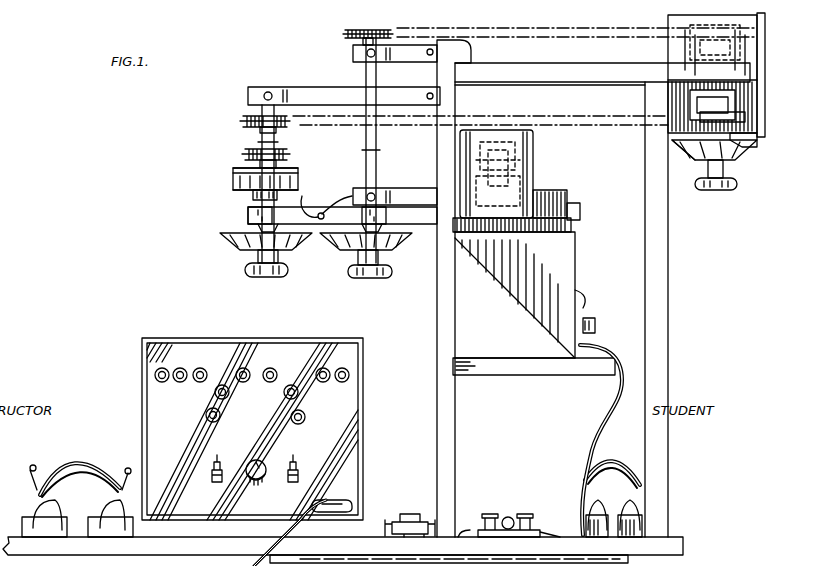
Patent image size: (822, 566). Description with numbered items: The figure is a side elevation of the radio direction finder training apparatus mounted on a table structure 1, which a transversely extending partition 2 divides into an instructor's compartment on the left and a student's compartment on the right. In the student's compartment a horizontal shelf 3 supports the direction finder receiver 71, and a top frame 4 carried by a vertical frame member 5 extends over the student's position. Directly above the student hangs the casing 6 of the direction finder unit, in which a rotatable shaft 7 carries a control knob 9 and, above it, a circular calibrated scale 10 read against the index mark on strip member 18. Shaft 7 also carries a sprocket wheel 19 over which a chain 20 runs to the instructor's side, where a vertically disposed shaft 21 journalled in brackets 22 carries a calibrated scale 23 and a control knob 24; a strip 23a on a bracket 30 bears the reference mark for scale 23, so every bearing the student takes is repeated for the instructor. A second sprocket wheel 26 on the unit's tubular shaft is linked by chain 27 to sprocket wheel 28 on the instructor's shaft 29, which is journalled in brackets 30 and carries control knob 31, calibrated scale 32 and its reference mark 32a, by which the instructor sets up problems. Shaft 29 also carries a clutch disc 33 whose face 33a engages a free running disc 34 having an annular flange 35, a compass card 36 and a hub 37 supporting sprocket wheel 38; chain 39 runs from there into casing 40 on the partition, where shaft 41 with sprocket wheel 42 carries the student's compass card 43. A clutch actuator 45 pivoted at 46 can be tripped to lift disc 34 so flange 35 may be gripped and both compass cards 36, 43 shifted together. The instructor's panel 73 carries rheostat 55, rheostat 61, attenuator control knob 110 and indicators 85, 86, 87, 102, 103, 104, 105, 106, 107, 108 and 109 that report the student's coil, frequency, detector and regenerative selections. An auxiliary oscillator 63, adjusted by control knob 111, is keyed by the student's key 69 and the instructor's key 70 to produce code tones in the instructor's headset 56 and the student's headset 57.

The table structure 1 is at (680, 546).
The partition 2 is at (437, 325).
The shelf 3 is at (573, 370).
The top frame 4 is at (527, 73).
The frame member 5 is at (668, 350).
The casing 6 is at (753, 47).
The rotatable shaft 7 is at (740, 157).
The control knob 9 is at (716, 192).
The calibrated scale 10 is at (690, 165).
The strip member 18 is at (758, 143).
The sprocket wheel 19 is at (762, 29).
The chain 20 is at (566, 30).
The vertically disposed shaft 21 is at (366, 70).
The brackets 22 is at (398, 60).
The calibrated scale 23 is at (400, 246).
The strip 23a is at (385, 222).
The control knob 24 is at (385, 278).
The sprocket wheel 26 is at (355, 30).
The chain 27 is at (548, 118).
The sprocket wheel 28 is at (240, 121).
The shaft 29 is at (262, 134).
The brackets 30 is at (282, 87).
The control knob 31 is at (245, 271).
The calibrated scale 32 is at (236, 240).
The reference mark 32a is at (248, 216).
The clutch disc 33 is at (250, 212).
The clutch face 33a is at (253, 195).
The free running disc 34 is at (233, 170).
The annular flange 35 is at (233, 174).
The compass card 36 is at (240, 178).
The hub 37 is at (291, 158).
The sprocket wheel 38 is at (284, 148).
The chain 39 is at (379, 151).
The casing 40 is at (540, 132).
The vertically disposed shaft 41 is at (556, 141).
The sprocket wheel 42 is at (520, 154).
The compass card 43 is at (524, 172).
The clutch actuator 45 is at (336, 200).
The pivot 46 is at (324, 205).
The variable rheostat 55 is at (220, 458).
The instructor's headset 56 is at (74, 471).
The student's headset 57 is at (646, 489).
The variable rheostat 61 is at (298, 467).
The auxiliary audio frequency oscillator 63 is at (570, 226).
The student's key 69 is at (509, 506).
The instructor's key 70 is at (410, 506).
The radio direction finder receiver 71 is at (575, 278).
The instructor's panel 73 is at (304, 348).
The indicator 85 is at (155, 367).
The indicator 86 is at (180, 368).
The indicator 87 is at (200, 368).
The indicator 102 is at (206, 415).
The indicator 103 is at (226, 398).
The indicator 104 is at (243, 368).
The indicator 105 is at (270, 368).
The indicator 106 is at (298, 393).
The indicator 107 is at (305, 417).
The indicator 108 is at (328, 368).
The indicator 109 is at (350, 374).
The attenuator control knob 110 is at (253, 482).
The control knob 111 is at (582, 206).